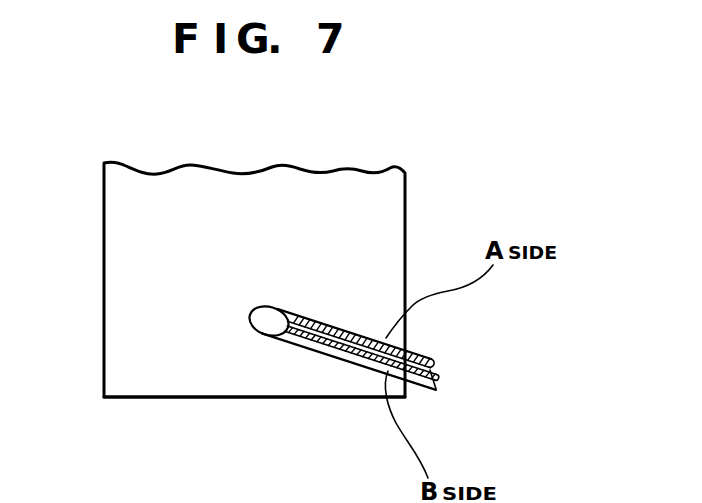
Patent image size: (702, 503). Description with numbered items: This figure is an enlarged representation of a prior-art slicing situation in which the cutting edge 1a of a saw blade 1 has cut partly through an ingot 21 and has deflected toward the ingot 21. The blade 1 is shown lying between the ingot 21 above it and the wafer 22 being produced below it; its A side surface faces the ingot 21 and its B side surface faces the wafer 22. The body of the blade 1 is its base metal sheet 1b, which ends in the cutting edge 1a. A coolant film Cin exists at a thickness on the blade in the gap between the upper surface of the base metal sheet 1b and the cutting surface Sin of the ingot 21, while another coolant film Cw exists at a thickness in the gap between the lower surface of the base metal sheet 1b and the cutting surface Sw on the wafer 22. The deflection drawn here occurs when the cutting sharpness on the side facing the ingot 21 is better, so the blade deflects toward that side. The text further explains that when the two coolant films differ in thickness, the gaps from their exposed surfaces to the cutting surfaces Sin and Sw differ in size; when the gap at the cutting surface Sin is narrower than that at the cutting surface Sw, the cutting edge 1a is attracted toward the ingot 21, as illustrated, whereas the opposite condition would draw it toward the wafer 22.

The saw blade 1 is at (336, 349).
The cutting edge 1a is at (251, 306).
The base metal sheet 1b is at (437, 383).
The ingot 21 is at (387, 232).
The wafer 22 is at (359, 386).
The coolant film Cin is at (317, 320).
The cutting surface of the ingot Sin is at (380, 341).
The coolant film Cw is at (312, 350).
The cutting surface on the wafer Sw is at (339, 359).